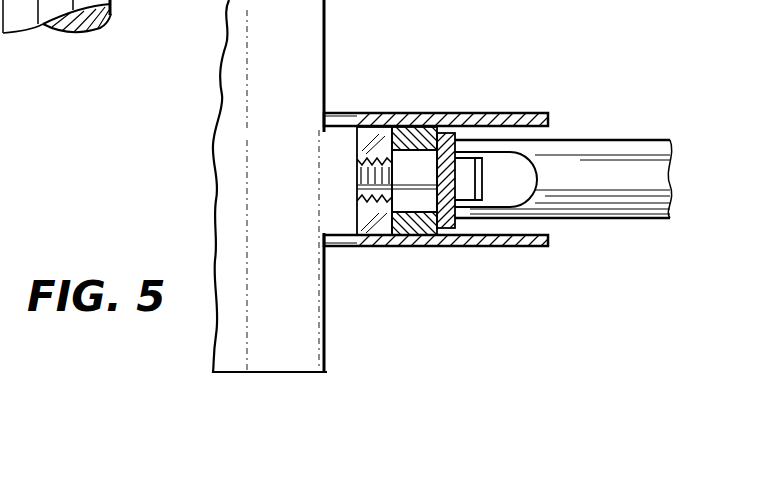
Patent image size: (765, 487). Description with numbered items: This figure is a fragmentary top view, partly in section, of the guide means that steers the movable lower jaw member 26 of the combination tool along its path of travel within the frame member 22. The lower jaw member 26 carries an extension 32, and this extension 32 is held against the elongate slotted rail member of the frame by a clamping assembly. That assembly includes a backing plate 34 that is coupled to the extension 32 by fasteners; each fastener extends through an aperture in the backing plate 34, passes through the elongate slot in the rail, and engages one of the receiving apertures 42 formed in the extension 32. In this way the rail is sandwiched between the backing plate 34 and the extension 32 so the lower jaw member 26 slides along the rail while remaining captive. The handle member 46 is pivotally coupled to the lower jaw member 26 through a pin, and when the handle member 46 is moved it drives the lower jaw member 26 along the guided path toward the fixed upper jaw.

The frame member 22 is at (483, 112).
The movable lower jaw member 26 is at (327, 352).
The extension 32 is at (357, 133).
The backing plate 34 is at (460, 208).
The receiving apertures 42 is at (357, 199).
The handle member 46 is at (592, 141).